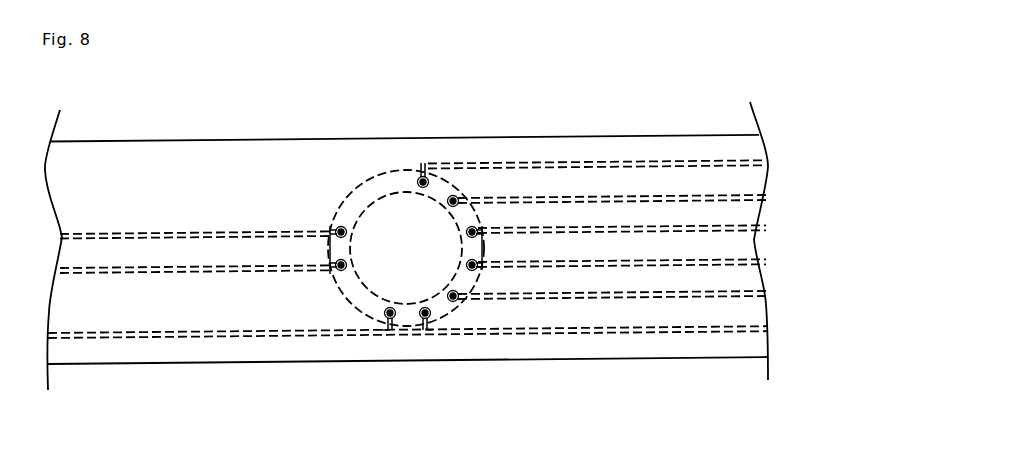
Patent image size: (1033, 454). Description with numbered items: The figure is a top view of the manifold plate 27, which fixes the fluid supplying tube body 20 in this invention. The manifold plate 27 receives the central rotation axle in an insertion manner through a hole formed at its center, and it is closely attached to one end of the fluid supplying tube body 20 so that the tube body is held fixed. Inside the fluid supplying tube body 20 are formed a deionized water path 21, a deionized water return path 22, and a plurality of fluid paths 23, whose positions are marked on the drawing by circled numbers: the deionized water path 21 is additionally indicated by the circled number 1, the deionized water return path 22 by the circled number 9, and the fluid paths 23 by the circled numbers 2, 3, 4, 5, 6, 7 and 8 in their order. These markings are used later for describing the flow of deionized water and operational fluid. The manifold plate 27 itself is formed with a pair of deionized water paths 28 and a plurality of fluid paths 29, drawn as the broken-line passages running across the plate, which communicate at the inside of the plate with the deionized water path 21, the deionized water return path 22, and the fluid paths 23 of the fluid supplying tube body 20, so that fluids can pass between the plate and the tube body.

The fluid supplying tube body 20 is at (369, 180).
The deionized water path 21 is at (340, 277).
The deionized water return path 22 is at (341, 224).
The fluid paths 23 is at (447, 293).
The manifold plate 27 is at (148, 150).
The deionized water paths 28 is at (167, 238).
The fluid paths 29 is at (537, 203).
The circled number 1 is at (329, 278).
The circled number 2 is at (372, 333).
The circled number 3 is at (437, 333).
The circled number 4 is at (463, 309).
The circled number 5 is at (485, 277).
The circled number 6 is at (488, 245).
The circled number 7 is at (468, 191).
The circled number 8 is at (422, 165).
The circled number 9 is at (329, 221).